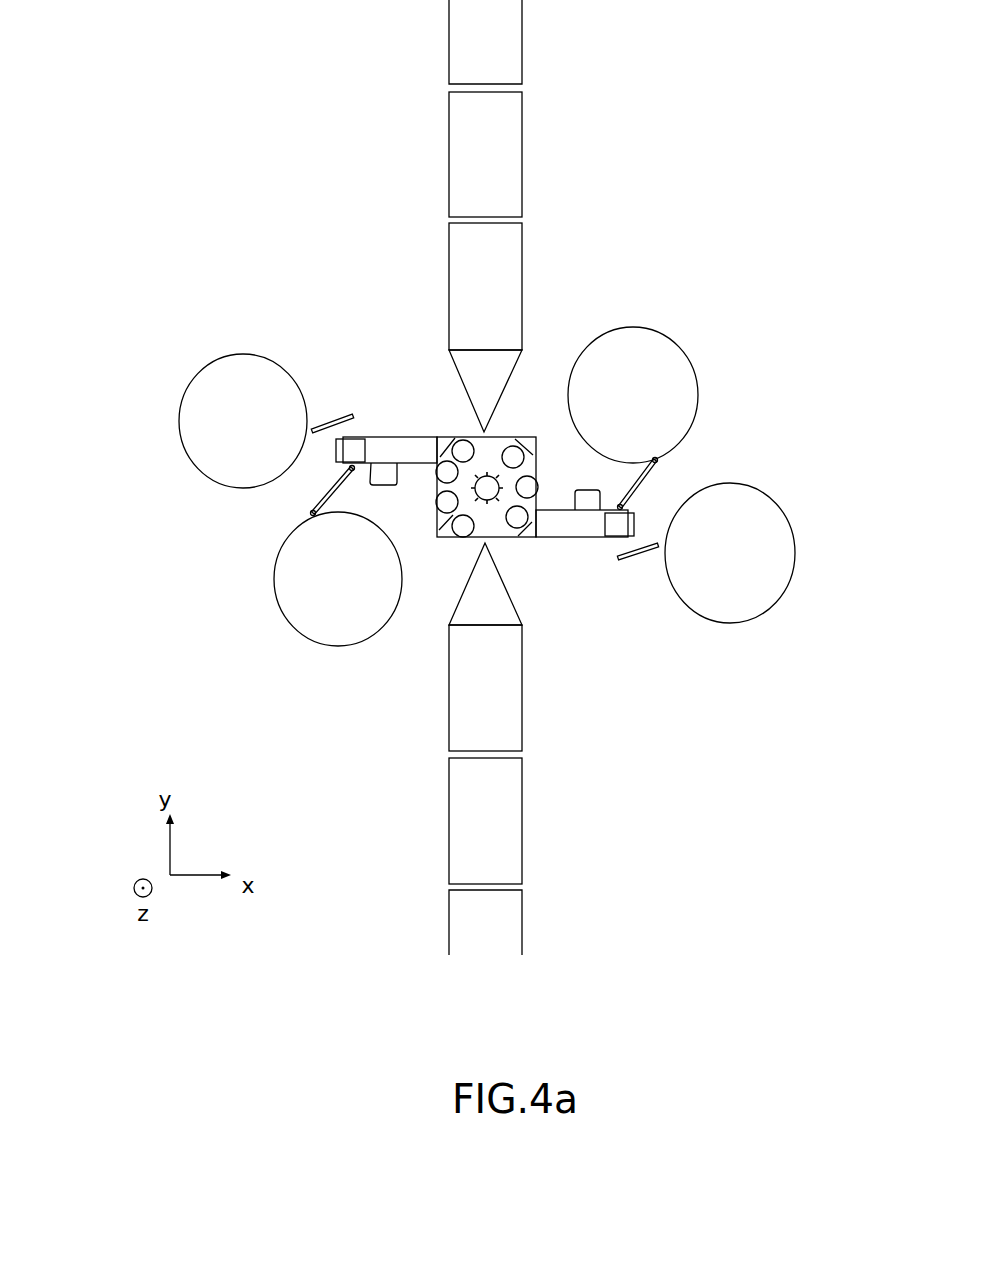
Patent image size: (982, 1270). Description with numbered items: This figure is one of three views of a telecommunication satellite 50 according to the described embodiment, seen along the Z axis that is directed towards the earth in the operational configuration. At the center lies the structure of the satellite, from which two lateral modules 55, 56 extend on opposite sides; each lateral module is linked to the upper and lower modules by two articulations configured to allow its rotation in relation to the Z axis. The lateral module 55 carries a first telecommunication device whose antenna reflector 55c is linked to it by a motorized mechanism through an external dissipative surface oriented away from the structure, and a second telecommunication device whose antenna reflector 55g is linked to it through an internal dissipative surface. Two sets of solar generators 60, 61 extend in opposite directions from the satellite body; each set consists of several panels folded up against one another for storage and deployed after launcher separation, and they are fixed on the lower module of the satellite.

The satellite 50 is at (285, 112).
The lateral module 55 is at (400, 440).
The antenna reflector 55c is at (302, 617).
The antenna reflector 55g is at (208, 390).
The lateral module 56 is at (555, 532).
The set of solar generators 60 is at (520, 837).
The set of solar generators 61 is at (522, 158).